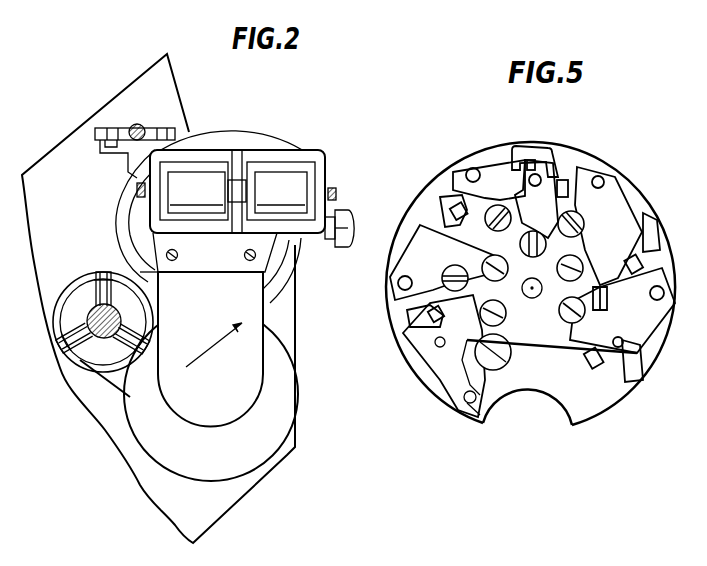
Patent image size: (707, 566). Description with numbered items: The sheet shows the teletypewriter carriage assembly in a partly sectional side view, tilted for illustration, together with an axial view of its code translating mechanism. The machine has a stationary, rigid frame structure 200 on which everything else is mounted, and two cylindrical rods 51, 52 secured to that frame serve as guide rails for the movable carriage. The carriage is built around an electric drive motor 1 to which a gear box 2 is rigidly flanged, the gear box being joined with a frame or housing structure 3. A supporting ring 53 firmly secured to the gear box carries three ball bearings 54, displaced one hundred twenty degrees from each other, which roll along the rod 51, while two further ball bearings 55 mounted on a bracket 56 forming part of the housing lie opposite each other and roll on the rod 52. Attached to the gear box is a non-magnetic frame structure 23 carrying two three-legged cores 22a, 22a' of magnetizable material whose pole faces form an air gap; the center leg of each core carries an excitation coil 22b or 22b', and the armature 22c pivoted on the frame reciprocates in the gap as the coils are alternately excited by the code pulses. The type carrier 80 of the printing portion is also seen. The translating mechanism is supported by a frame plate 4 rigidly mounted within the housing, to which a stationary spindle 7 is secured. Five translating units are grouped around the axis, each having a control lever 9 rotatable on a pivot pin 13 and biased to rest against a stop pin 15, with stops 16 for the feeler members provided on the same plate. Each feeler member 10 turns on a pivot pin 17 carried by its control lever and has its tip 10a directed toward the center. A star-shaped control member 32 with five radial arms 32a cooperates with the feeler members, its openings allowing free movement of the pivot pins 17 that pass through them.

In FIG. 2, the electric drive motor 1 is at (172, 468).
In FIG. 2, the gear box 2 is at (252, 400).
In FIG. 2, the housing structure 3 is at (117, 213).
In FIG. 5, the frame plate 4 is at (585, 418).
In FIG. 5, the stationary spindle 7 is at (538, 280).
In FIG. 5, the control lever 9 is at (493, 165).
In FIG. 5, the feeler member 10 is at (433, 307).
In FIG. 5, the tip of feeler member 10a is at (502, 318).
In FIG. 5, the pivot pin 13 is at (468, 406).
In FIG. 5, the stop pin 15 is at (455, 395).
In FIG. 5, the stop 16 is at (505, 380).
In FIG. 5, the pivot pin 17 is at (441, 347).
In FIG. 2, the three-legged core 22a is at (194, 167).
In FIG. 2, the three-legged core 22a' is at (306, 181).
In FIG. 2, the excitation coil 22b is at (196, 219).
In FIG. 2, the excitation coil 22b' is at (281, 172).
In FIG. 2, the armature 22c is at (240, 163).
In FIG. 2, the frame structure 23 is at (298, 156).
In FIG. 5, the control member 32 is at (538, 343).
In FIG. 5, the radial arm 32a is at (428, 197).
In FIG. 2, the cylindrical rod 51 is at (91, 315).
In FIG. 2, the cylindrical rod 52 is at (137, 124).
In FIG. 2, the supporting ring 53 is at (92, 363).
In FIG. 2, the ball bearing 54 is at (107, 272).
In FIG. 2, the ball bearing 55 is at (107, 130).
In FIG. 2, the bracket 56 is at (109, 155).
In FIG. 2, the type carrier 80 is at (333, 247).
In FIG. 2, the frame structure 200 is at (288, 452).